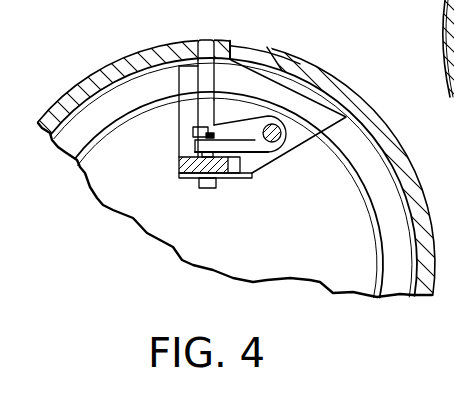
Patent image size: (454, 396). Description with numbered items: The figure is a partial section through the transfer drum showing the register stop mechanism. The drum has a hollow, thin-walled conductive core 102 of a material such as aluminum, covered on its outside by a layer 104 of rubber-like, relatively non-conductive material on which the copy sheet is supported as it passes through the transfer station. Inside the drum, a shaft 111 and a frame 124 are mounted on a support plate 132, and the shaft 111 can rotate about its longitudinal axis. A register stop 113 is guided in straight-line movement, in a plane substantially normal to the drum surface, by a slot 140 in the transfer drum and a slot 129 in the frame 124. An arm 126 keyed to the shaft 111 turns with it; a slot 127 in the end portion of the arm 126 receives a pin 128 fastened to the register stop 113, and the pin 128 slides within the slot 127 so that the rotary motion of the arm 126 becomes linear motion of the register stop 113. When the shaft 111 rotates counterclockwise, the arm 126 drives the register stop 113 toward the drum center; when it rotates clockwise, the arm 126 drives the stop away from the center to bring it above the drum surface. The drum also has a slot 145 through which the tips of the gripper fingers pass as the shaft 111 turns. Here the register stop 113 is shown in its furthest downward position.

The conductive core 102 is at (84, 79).
The layer of insulating material 104 is at (152, 42).
The shaft 111 is at (285, 150).
The register stop 113 is at (207, 53).
The frame 124 is at (179, 170).
The arm 126 is at (249, 118).
The slot 127 is at (194, 131).
The pin 128 is at (213, 110).
The slot 129 is at (206, 188).
The support plate 132 is at (316, 112).
The slot 140 is at (201, 40).
The slot 145 is at (252, 50).